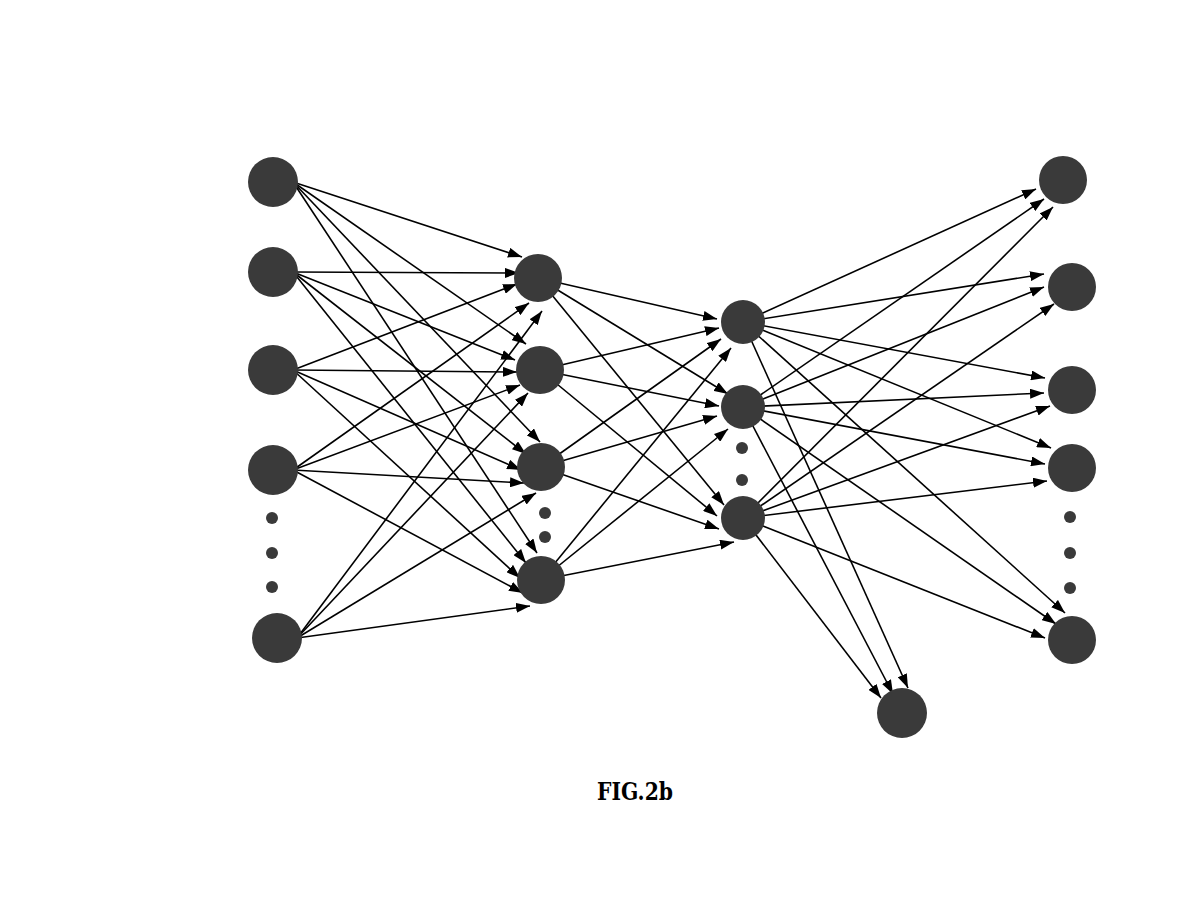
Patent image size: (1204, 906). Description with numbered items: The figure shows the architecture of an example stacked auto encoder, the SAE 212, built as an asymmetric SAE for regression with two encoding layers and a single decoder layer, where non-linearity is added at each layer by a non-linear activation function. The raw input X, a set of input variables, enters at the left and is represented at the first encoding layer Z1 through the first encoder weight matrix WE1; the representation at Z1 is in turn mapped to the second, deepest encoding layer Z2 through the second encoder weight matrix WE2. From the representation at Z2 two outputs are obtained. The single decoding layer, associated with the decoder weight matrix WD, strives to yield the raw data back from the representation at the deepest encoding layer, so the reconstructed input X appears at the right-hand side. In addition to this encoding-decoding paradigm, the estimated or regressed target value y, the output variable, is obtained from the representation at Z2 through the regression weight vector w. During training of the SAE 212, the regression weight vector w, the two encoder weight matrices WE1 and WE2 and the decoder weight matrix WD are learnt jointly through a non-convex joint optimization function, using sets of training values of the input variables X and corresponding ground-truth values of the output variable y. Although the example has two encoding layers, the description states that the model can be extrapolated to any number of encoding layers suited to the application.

The stacked auto encoder (SAE) 212 is at (684, 157).
The raw input X is at (247, 410).
The first encoding layer Z1 is at (562, 423).
The second (deepest) encoding layer Z2 is at (757, 402).
The target value (output variable) y is at (906, 725).
The first encoder weight matrix WE1 is at (417, 429).
The second encoder weight matrix WE2 is at (636, 448).
The decoder weight matrix WD is at (904, 415).
The regression weight vector w is at (825, 510).